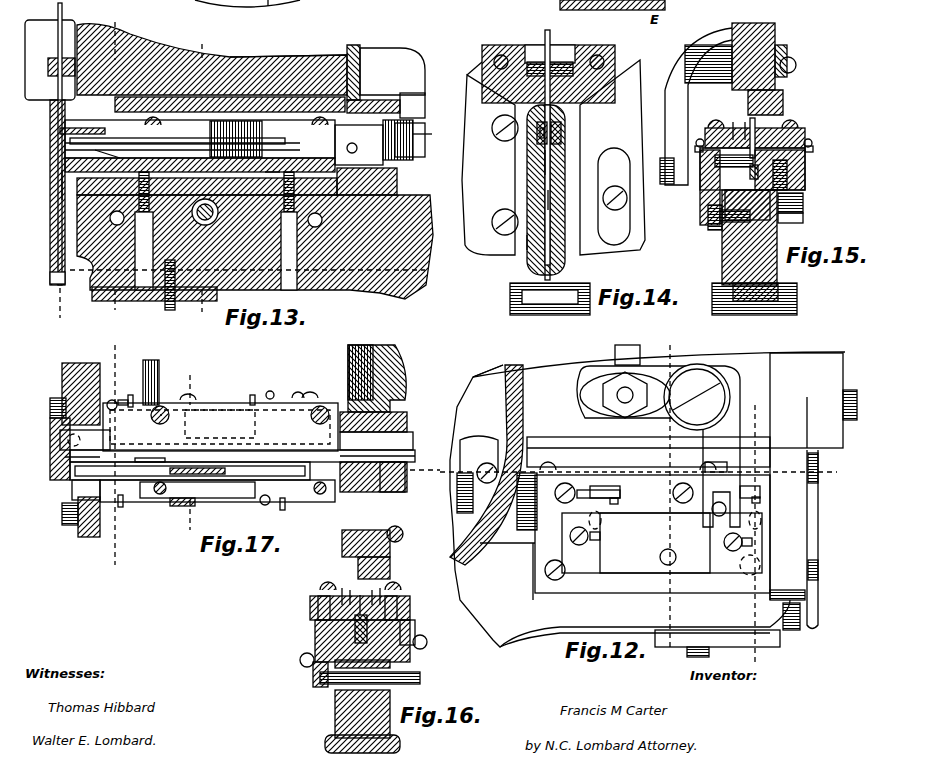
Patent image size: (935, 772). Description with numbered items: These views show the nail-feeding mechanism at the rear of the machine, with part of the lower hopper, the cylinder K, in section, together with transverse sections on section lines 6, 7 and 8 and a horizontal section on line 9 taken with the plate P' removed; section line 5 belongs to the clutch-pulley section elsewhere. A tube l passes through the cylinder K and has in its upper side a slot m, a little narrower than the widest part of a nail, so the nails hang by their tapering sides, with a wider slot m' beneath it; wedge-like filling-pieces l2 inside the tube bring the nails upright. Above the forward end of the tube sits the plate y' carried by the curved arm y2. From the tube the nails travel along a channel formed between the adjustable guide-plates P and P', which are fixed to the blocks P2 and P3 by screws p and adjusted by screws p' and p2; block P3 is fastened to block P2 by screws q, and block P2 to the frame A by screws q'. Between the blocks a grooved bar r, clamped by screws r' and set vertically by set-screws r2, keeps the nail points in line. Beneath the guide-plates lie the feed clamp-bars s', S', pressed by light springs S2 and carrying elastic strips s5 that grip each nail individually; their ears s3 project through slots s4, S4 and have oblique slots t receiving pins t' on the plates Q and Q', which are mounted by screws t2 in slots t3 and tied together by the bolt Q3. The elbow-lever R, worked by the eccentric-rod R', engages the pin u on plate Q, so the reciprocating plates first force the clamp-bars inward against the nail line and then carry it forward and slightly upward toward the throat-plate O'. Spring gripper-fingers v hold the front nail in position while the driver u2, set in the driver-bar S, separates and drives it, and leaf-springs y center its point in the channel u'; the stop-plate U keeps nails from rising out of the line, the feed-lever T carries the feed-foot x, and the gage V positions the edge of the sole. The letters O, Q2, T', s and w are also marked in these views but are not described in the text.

In FIG. 13, the frame A is at (320, 50).
In FIG. 14, the frame A is at (472, 54).
In FIG. 15, the frame A is at (764, 18).
In FIG. 17, the frame A is at (58, 374).
In FIG. 16, the frame A is at (365, 530).
In FIG. 12, the frame A is at (760, 377).
In FIG. 13, the cylinder K is at (386, 79).
In FIG. 17, the cylinder K is at (370, 418).
In FIG. 12, the cylinder K is at (508, 402).
In FIG. 13, the presser-bar lifter plate O is at (50, 192).
In FIG. 14, the presser-bar lifter plate O is at (547, 190).
In FIG. 17, the presser-bar lifter plate O is at (53, 449).
In FIG. 14, the throat-plate O' is at (505, 175).
In FIG. 12, the throat-plate O' is at (825, 539).
In FIG. 13, the adjustable guide-plate P is at (200, 139).
In FIG. 15, the adjustable guide-plate P is at (746, 133).
In FIG. 17, the adjustable guide-plate P is at (220, 427).
In FIG. 16, the adjustable guide-plate P is at (351, 603).
In FIG. 12, the adjustable guide-plate P is at (652, 532).
In FIG. 14, the adjustable guide-plate P' is at (563, 129).
In FIG. 15, the adjustable guide-plate P' is at (758, 153).
In FIG. 16, the adjustable guide-plate P' is at (357, 603).
In FIG. 13, the block P2 is at (207, 184).
In FIG. 15, the block P2 is at (720, 242).
In FIG. 16, the block P2 is at (366, 630).
In FIG. 12, the block P2 is at (652, 550).
In FIG. 15, the block P3 is at (793, 170).
In FIG. 17, the block P3 is at (217, 491).
In FIG. 16, the block P3 is at (421, 631).
In FIG. 15, the plate Q is at (694, 187).
In FIG. 17, the plate Q is at (220, 410).
In FIG. 16, the plate Q is at (309, 674).
In FIG. 12, the plate Q is at (655, 543).
In FIG. 15, the plate Q' is at (805, 203).
In FIG. 17, the plate Q' is at (193, 509).
In FIG. 16, the plate Q' is at (385, 660).
In FIG. 13, the cam roller Q2 is at (213, 212).
In FIG. 15, the bolt Q3 is at (806, 220).
In FIG. 16, the bolt Q3 is at (382, 679).
In FIG. 12, the bolt Q3 is at (676, 558).
In FIG. 15, the elbow-lever R is at (698, 106).
In FIG. 12, the elbow-lever R is at (658, 445).
In FIG. 12, the eccentric-rod R' is at (627, 355).
In FIG. 13, the driver-bar S is at (227, 138).
In FIG. 13, the feed clamp-bar S' is at (177, 143).
In FIG. 17, the light spring S2 is at (190, 455).
In FIG. 17, the slot S4 is at (190, 467).
In FIG. 14, the feed-lever T is at (559, 74).
In FIG. 17, the lower bearing block T' is at (79, 526).
In FIG. 13, the adjustable stop-plate U is at (230, 105).
In FIG. 15, the adjustable stop-plate U is at (743, 70).
In FIG. 16, the adjustable stop-plate U is at (398, 544).
In FIG. 12, the adjustable stop-plate U is at (648, 452).
In FIG. 13, the adjustable gage V is at (154, 289).
In FIG. 14, the adjustable gage V is at (522, 294).
In FIG. 15, the adjustable gage V is at (780, 296).
In FIG. 12, the adjustable gage V is at (717, 643).
In FIG. 13, the tube l is at (411, 140).
In FIG. 17, the tube l is at (376, 441).
In FIG. 12, the tube l is at (497, 501).
In FIG. 13, the wedge-like filling-piece l2 is at (349, 145).
In FIG. 17, the wedge-like filling-piece l2 is at (391, 485).
In FIG. 13, the slot m is at (360, 140).
In FIG. 13, the slot m' is at (394, 177).
In FIG. 17, the slot m' is at (388, 453).
In FIG. 15, the screw p is at (752, 115).
In FIG. 17, the screw p is at (235, 413).
In FIG. 16, the screw p is at (368, 580).
In FIG. 12, the screw p is at (628, 460).
In FIG. 13, the screw p' is at (237, 117).
In FIG. 17, the screw p' is at (240, 403).
In FIG. 12, the screw p' is at (616, 491).
In FIG. 17, the screw p2 is at (244, 500).
In FIG. 15, the screw q is at (799, 176).
In FIG. 13, the screw q' is at (220, 215).
In FIG. 15, the screw q' is at (718, 224).
In FIG. 12, the screw q' is at (654, 566).
In FIG. 13, the grooved bar r is at (200, 165).
In FIG. 14, the grooved bar r is at (524, 162).
In FIG. 15, the grooved bar r is at (747, 171).
In FIG. 17, the grooved bar r is at (242, 448).
In FIG. 16, the grooved bar r is at (366, 629).
In FIG. 13, the screw r' is at (107, 152).
In FIG. 15, the screw r' is at (734, 159).
In FIG. 12, the screw r' is at (675, 519).
In FIG. 13, the set-screw r2 is at (227, 191).
In FIG. 15, the set-screw r2 is at (759, 214).
In FIG. 13, the pawl s is at (272, 164).
In FIG. 15, the pawl s is at (743, 123).
In FIG. 16, the pawl s is at (365, 592).
In FIG. 15, the feed clamp-bar s' is at (732, 123).
In FIG. 16, the feed clamp-bar s' is at (365, 589).
In FIG. 15, the projecting ear s3 is at (696, 141).
In FIG. 17, the projecting ear s3 is at (196, 451).
In FIG. 12, the projecting ear s3 is at (675, 484).
In FIG. 12, the slot s4 is at (596, 484).
In FIG. 15, the elastic strip s5 is at (763, 131).
In FIG. 17, the elastic strip s5 is at (150, 460).
In FIG. 16, the elastic strip s5 is at (363, 594).
In FIG. 17, the oblique slot t is at (203, 452).
In FIG. 15, the pin t' is at (742, 146).
In FIG. 17, the pin t' is at (193, 447).
In FIG. 12, the pin t' is at (697, 501).
In FIG. 15, the screw t2 is at (699, 215).
In FIG. 17, the screw t2 is at (300, 385).
In FIG. 16, the screw t2 is at (364, 651).
In FIG. 12, the screw t2 is at (656, 542).
In FIG. 12, the slot t3 is at (780, 539).
In FIG. 15, the pin u is at (660, 171).
In FIG. 17, the pin u is at (156, 382).
In FIG. 12, the pin u is at (719, 509).
In FIG. 13, the channel u' is at (46, 185).
In FIG. 14, the channel u' is at (527, 200).
In FIG. 17, the channel u' is at (66, 461).
In FIG. 13, the driver u2 is at (62, 14).
In FIG. 14, the driver u2 is at (541, 149).
In FIG. 13, the gripper-finger v is at (60, 130).
In FIG. 14, the gripper-finger v is at (537, 132).
In FIG. 17, the gripper-finger v is at (74, 436).
In FIG. 12, the gripper-finger v is at (716, 465).
In FIG. 13, the bushing w is at (50, 66).
In FIG. 14, the bushing w is at (550, 61).
In FIG. 14, the feed-foot x is at (575, 255).
In FIG. 17, the feed-foot x is at (72, 490).
In FIG. 12, the feed-foot x is at (791, 616).
In FIG. 13, the leaf-spring y is at (47, 275).
In FIG. 14, the leaf-spring y is at (549, 241).
In FIG. 17, the leaf-spring y is at (56, 461).
In FIG. 12, the leaf-spring y is at (804, 527).
In FIG. 12, the plate y' is at (479, 444).
In FIG. 13, the curved arm y2 is at (412, 104).
In FIG. 12, the curved arm y2 is at (505, 448).
In FIG. 13, the section line 5 is at (268, 15).
In FIG. 13, the section line 6 is at (59, 311).
In FIG. 13, the section line 7 is at (114, 165).
In FIG. 17, the section line 7 is at (115, 456).
In FIG. 13, the section line 8 is at (201, 177).
In FIG. 17, the section line 8 is at (184, 451).
In FIG. 17, the section line 9 is at (425, 473).
In FIG. 12, the section line 9 is at (647, 473).